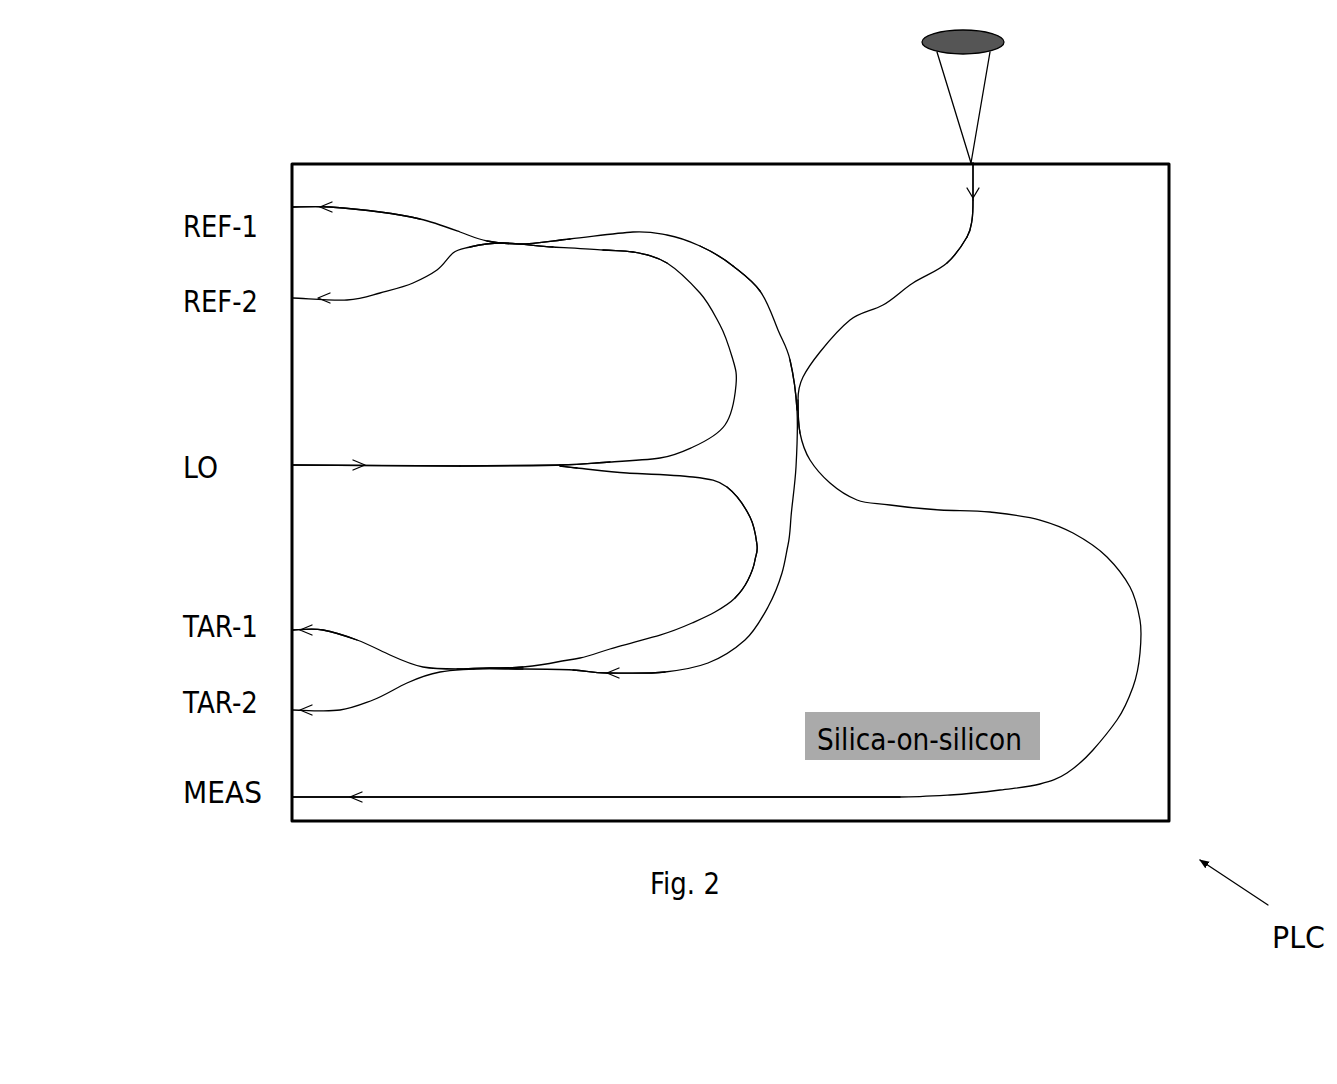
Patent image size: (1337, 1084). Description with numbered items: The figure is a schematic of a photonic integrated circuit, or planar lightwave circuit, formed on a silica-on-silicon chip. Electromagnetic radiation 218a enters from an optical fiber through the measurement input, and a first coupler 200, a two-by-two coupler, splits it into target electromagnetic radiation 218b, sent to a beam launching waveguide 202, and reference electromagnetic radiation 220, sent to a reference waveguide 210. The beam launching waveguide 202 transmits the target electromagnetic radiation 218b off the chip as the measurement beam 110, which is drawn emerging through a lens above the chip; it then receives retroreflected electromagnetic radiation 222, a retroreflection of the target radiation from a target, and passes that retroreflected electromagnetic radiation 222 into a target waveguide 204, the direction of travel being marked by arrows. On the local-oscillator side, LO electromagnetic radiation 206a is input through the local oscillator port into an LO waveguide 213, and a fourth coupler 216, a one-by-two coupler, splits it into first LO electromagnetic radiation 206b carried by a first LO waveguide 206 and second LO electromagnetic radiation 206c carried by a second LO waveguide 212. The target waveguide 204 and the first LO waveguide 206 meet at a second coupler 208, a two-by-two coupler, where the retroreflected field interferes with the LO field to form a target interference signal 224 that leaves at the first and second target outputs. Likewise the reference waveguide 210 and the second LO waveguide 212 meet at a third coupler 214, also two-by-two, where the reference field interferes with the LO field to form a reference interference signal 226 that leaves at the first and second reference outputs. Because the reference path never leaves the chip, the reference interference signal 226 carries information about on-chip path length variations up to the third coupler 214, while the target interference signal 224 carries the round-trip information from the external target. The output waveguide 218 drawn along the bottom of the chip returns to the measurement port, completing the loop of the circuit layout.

The measurement beam 110 is at (978, 115).
The first coupler 200 is at (817, 379).
The beam launching waveguide 202 is at (965, 253).
The target waveguide 204 is at (783, 563).
The first LO waveguide 206 is at (735, 587).
The LO electromagnetic radiation 206a is at (364, 462).
The first LO electromagnetic radiation 206b is at (657, 633).
The second LO electromagnetic radiation 206c is at (628, 255).
The second coupler 208 is at (496, 649).
The reference waveguide 210 is at (750, 277).
The second LO waveguide 212 is at (680, 273).
The LO waveguide 213 is at (440, 463).
The third coupler 214 is at (516, 237).
The fourth coupler 216 is at (542, 452).
The measurement output waveguide 218 is at (355, 800).
The electromagnetic radiation 218a is at (890, 503).
The target electromagnetic radiation 218b is at (972, 210).
The reference electromagnetic radiation 220 is at (712, 248).
The retroreflected electromagnetic radiation 222 is at (966, 195).
The target interference signal 224 is at (318, 629).
The reference interference signal 226 is at (320, 206).